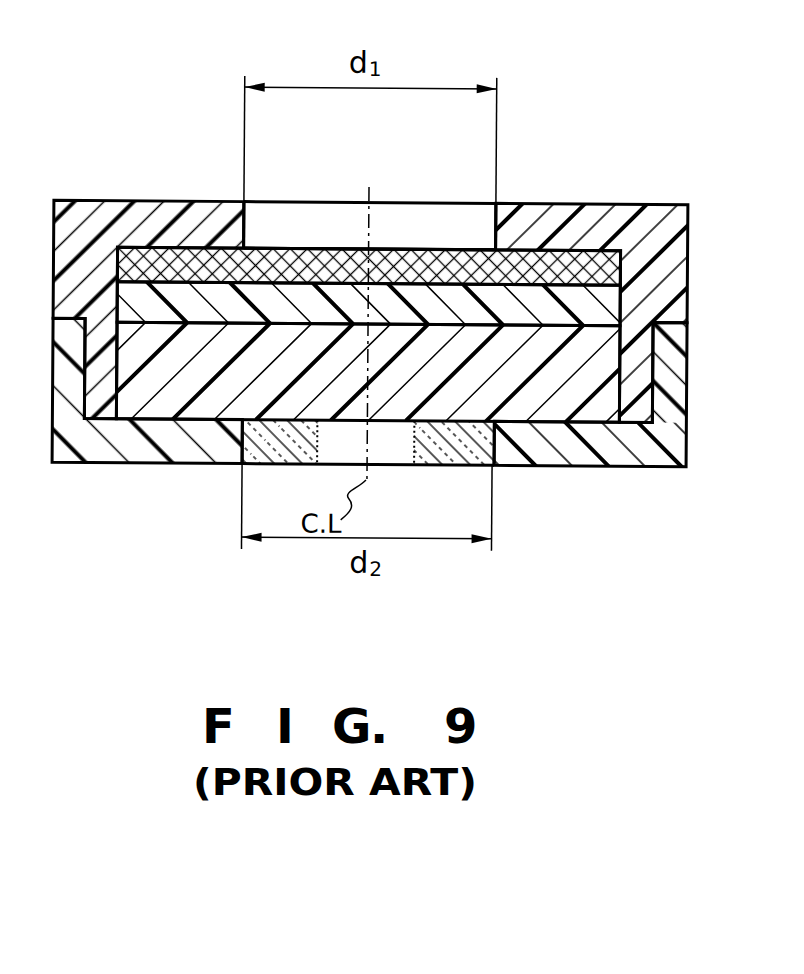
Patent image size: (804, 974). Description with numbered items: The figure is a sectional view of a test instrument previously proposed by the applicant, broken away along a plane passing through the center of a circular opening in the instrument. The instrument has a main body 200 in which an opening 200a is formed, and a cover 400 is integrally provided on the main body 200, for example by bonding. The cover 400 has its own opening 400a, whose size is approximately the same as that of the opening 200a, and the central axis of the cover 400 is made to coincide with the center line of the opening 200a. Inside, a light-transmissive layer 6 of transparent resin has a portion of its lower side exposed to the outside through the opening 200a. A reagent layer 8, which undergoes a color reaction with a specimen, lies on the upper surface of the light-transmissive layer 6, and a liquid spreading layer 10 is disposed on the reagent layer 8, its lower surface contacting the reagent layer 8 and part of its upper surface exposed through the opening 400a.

The cover 400 is at (612, 220).
The opening 400a is at (247, 222).
The main body 200 is at (542, 457).
The opening 200a is at (318, 452).
The liquid spreading layer 10 is at (462, 262).
The reagent layer 8 is at (412, 300).
The light-transmissive layer 6 is at (413, 405).